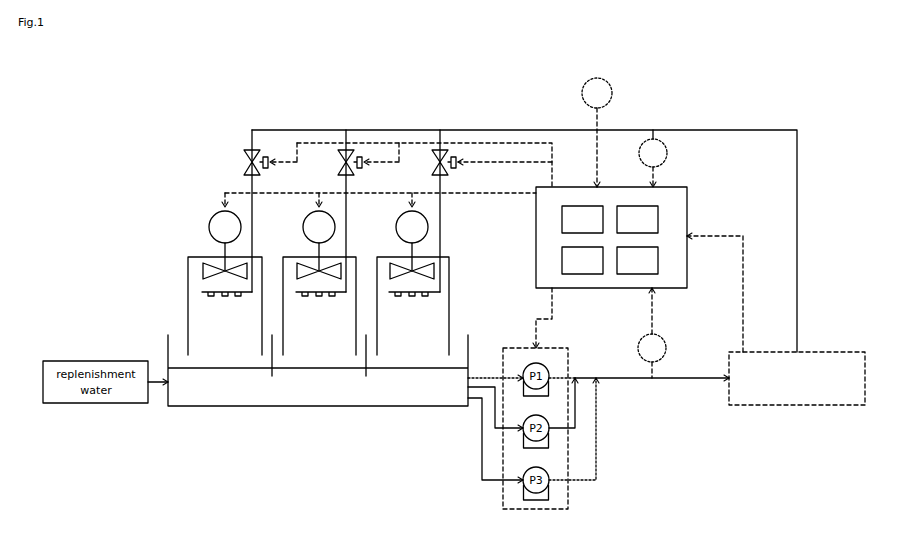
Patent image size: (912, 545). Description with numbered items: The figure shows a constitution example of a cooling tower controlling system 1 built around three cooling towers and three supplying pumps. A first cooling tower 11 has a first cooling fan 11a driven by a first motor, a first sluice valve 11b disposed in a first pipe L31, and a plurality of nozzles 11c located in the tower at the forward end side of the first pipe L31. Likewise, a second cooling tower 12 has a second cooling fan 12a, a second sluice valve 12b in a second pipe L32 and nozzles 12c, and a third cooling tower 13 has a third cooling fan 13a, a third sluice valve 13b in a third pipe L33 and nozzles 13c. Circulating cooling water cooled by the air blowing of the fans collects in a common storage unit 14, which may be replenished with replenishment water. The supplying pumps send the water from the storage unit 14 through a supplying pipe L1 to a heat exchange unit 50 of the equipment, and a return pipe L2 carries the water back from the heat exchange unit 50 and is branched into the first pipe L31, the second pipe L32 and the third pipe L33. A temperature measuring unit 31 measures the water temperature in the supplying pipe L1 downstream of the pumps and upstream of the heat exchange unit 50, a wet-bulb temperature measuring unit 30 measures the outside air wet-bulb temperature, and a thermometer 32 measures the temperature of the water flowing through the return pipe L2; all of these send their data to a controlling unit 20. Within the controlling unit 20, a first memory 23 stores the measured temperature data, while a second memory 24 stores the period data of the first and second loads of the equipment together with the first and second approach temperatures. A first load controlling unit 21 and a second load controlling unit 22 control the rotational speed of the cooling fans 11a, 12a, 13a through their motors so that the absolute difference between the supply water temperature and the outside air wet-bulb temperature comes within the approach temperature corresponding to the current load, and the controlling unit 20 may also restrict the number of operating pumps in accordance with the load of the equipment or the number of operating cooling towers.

The cooling tower controlling system 1 is at (748, 117).
The first cooling tower 11 is at (213, 263).
The first cooling fan 11a is at (211, 264).
The first sluice valve 11b is at (246, 165).
The nozzles 11c is at (228, 302).
The second cooling tower 12 is at (307, 263).
The second cooling fan 12a is at (305, 264).
The second sluice valve 12b is at (340, 165).
The nozzles 12c is at (322, 302).
The third cooling tower 13 is at (400, 263).
The third cooling fan 13a is at (398, 264).
The third sluice valve 13b is at (434, 165).
The nozzles 13c is at (415, 302).
The storage unit 14 is at (293, 406).
The controlling unit 20 is at (632, 237).
The first load controlling unit 21 is at (582, 219).
The second load controlling unit 22 is at (582, 260).
The first memory 23 is at (637, 219).
The second memory 24 is at (637, 260).
The wet-bulb temperature measuring unit 30 is at (614, 92).
The temperature measuring unit 31 is at (667, 349).
The thermometer 32 is at (668, 152).
The heat exchange unit 50 is at (769, 406).
The supplying pipe L1 is at (635, 379).
The return pipe L2 is at (798, 190).
The first pipe L31 is at (255, 208).
The second pipe L32 is at (349, 208).
The third pipe L33 is at (443, 208).